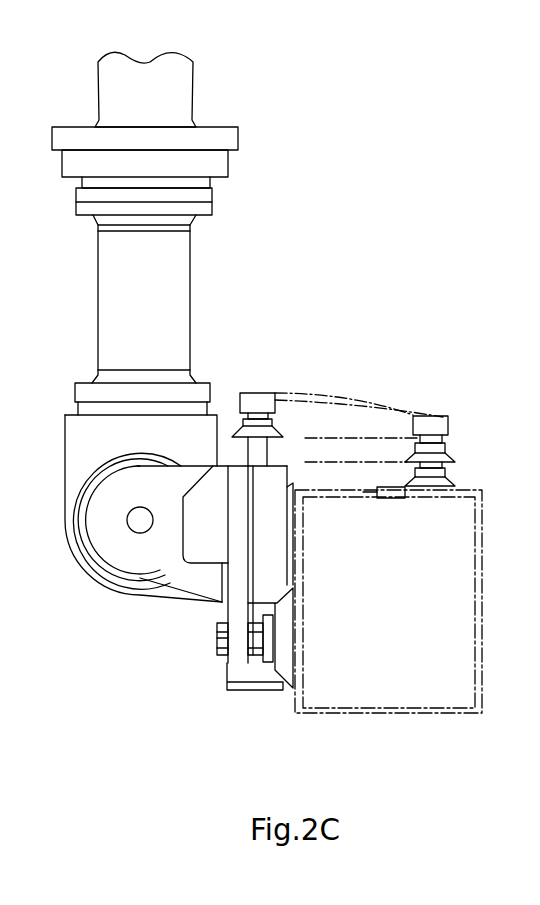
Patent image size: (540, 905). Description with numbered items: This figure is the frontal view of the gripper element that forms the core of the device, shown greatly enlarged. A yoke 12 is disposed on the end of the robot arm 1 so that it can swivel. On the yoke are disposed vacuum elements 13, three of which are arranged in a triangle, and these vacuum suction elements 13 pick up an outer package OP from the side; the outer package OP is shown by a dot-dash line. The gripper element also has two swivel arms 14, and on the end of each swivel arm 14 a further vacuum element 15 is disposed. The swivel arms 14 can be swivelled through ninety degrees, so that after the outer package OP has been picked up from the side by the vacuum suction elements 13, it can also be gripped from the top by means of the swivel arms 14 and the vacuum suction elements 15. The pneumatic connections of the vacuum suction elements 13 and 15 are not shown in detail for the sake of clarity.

The robot arm 1 is at (173, 267).
The yoke 12 is at (238, 607).
The vacuum elements 13 is at (283, 670).
The swivel arms 14 is at (250, 402).
The vacuum element 15 is at (273, 432).
The outer package OP is at (447, 685).